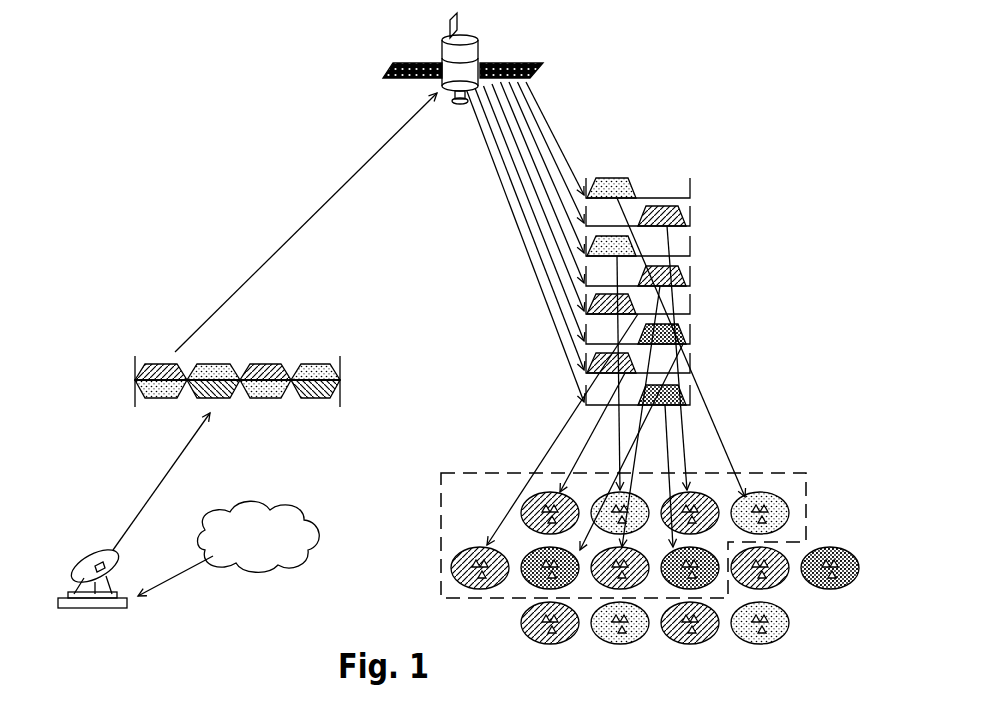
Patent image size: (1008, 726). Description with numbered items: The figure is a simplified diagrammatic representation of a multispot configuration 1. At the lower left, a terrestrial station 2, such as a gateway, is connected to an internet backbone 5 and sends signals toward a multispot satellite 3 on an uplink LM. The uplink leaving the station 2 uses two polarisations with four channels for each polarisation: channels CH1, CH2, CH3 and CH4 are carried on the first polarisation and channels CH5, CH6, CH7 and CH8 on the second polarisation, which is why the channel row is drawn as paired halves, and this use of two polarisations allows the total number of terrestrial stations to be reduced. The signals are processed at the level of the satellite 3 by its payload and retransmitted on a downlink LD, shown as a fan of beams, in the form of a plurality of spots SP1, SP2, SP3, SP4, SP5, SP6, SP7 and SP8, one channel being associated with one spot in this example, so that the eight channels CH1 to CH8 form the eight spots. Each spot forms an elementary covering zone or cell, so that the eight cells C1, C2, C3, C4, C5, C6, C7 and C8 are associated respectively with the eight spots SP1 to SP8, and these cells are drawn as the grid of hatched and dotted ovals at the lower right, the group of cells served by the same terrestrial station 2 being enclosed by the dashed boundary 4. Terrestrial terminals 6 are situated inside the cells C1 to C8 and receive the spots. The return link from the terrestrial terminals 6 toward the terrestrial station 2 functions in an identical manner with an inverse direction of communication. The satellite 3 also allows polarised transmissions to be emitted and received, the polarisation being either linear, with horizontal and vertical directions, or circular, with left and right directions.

The multispot configuration 1 is at (209, 198).
The terrestrial station 2 is at (97, 608).
The multispot satellite 3 is at (445, 52).
The coverage area 4 is at (807, 507).
The internet backbone 5 is at (302, 565).
The terrestrial terminal 6 is at (485, 590).
The channel Ch1 CH1 is at (163, 400).
The channel Ch2 CH2 is at (218, 400).
The channel Ch3 CH3 is at (263, 400).
The channel Ch4 CH4 is at (310, 400).
The channel Ch5 CH5 is at (155, 363).
The channel Ch6 CH6 is at (215, 363).
The channel Ch7 CH7 is at (267, 363).
The channel Ch8 CH8 is at (313, 363).
The spot SP1 is at (620, 213).
The spot SP2 is at (665, 430).
The spot SP3 is at (690, 410).
The spot SP4 is at (665, 382).
The spot SP5 is at (628, 362).
The spot SP6 is at (697, 420).
The spot SP7 is at (547, 548).
The spot SP8 is at (607, 490).
The cell C1 is at (778, 494).
The cell C2 is at (712, 494).
The cell C3 is at (640, 494).
The cell C4 is at (522, 515).
The cell C5 is at (645, 590).
The cell C6 is at (525, 590).
The cell C7 is at (451, 568).
The cell C8 is at (720, 590).
The downlink LD is at (526, 242).
The uplink LM is at (306, 222).